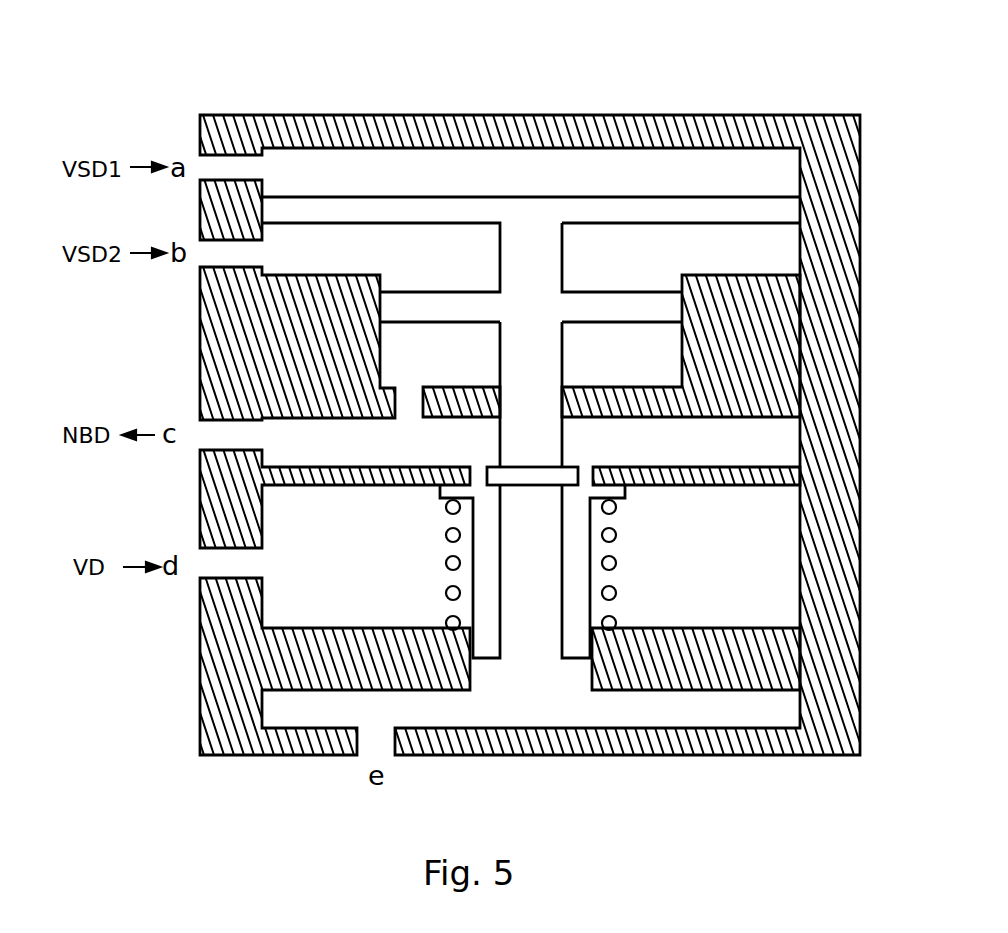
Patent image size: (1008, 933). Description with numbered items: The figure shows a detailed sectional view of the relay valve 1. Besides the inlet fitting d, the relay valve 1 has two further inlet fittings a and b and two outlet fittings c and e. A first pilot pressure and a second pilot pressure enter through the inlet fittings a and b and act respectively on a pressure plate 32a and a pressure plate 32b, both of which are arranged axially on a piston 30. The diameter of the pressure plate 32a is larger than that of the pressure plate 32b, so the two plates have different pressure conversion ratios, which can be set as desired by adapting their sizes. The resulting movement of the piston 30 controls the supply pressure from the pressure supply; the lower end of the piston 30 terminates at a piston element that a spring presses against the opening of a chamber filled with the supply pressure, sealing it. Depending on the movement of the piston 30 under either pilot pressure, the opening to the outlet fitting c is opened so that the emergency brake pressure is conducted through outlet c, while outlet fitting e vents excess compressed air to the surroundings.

The relay valve 1 is at (773, 87).
The piston 30 is at (563, 436).
The pressure plate 32a is at (603, 203).
The pressure plate 32b is at (582, 295).